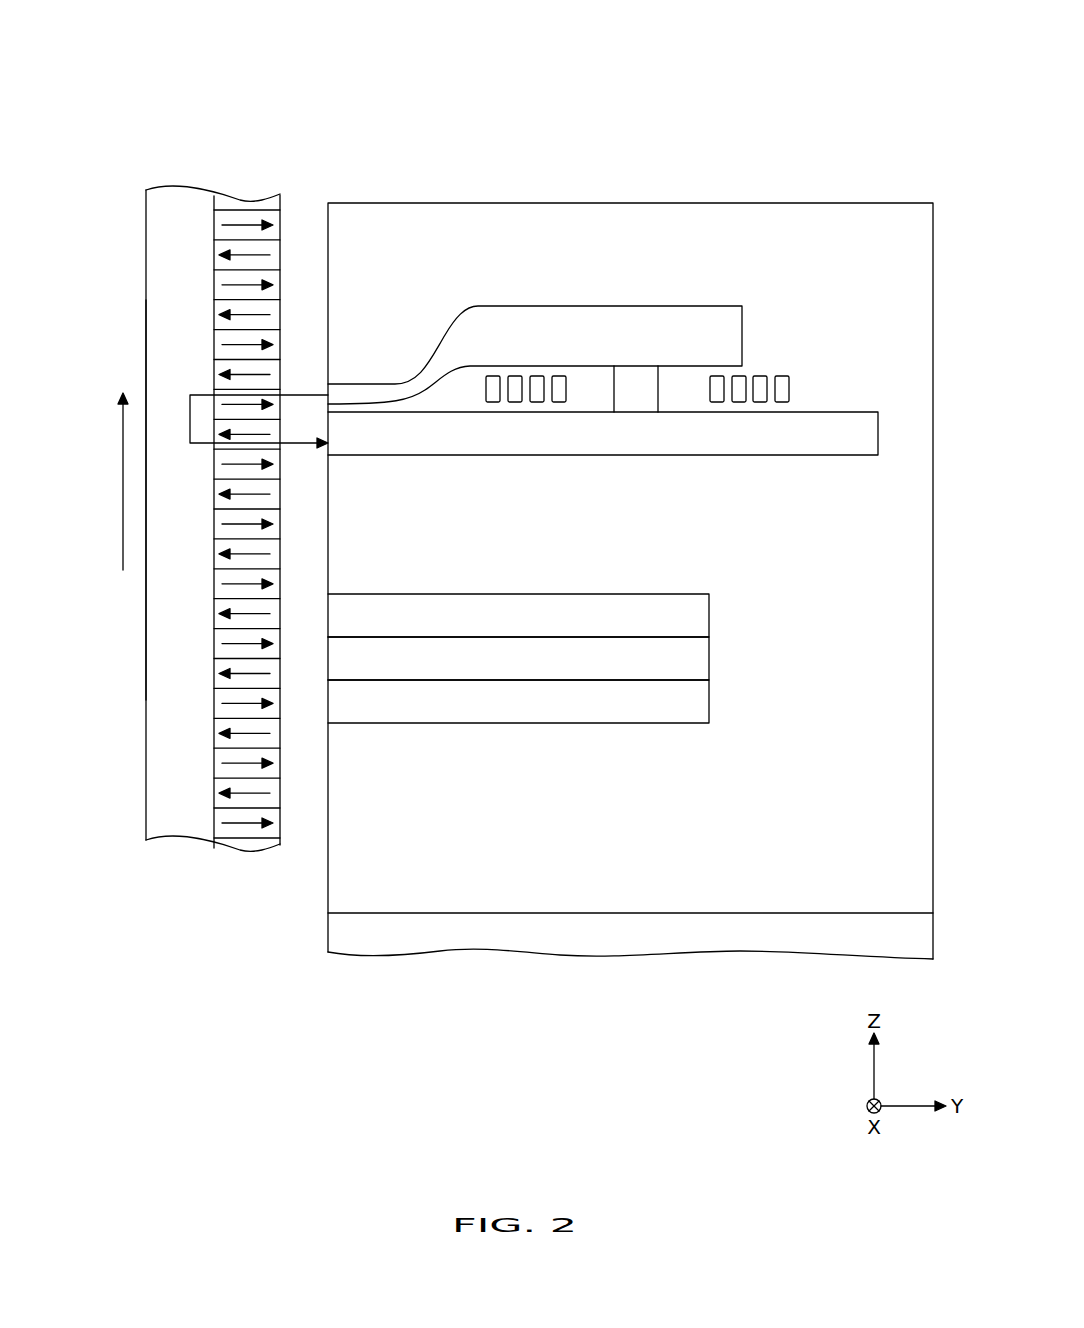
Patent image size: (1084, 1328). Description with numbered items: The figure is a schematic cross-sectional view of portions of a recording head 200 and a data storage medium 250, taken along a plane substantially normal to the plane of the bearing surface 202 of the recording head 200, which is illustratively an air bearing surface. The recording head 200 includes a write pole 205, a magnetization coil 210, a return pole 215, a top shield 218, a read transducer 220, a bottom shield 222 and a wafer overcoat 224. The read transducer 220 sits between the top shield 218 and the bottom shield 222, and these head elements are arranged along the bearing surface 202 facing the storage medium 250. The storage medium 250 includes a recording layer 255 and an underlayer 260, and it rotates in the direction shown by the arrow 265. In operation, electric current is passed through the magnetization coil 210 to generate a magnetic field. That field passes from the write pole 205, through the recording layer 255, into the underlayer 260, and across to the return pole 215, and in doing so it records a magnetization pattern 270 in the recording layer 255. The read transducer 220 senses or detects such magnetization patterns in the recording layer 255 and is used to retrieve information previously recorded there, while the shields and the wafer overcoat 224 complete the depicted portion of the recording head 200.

The recording head 200 is at (765, 130).
The bearing surface 202 is at (330, 895).
The write pole 205 is at (373, 383).
The magnetization coil 210 is at (537, 380).
The return pole 215 is at (508, 438).
The top shield 218 is at (647, 617).
The read transducer 220 is at (698, 660).
The bottom shield 222 is at (610, 708).
The wafer overcoat 224 is at (872, 556).
The data storage medium 250 is at (184, 845).
The recording layer 255 is at (229, 206).
The underlayer 260 is at (166, 821).
The arrow 265 is at (123, 488).
The magnetization pattern 270 is at (248, 222).